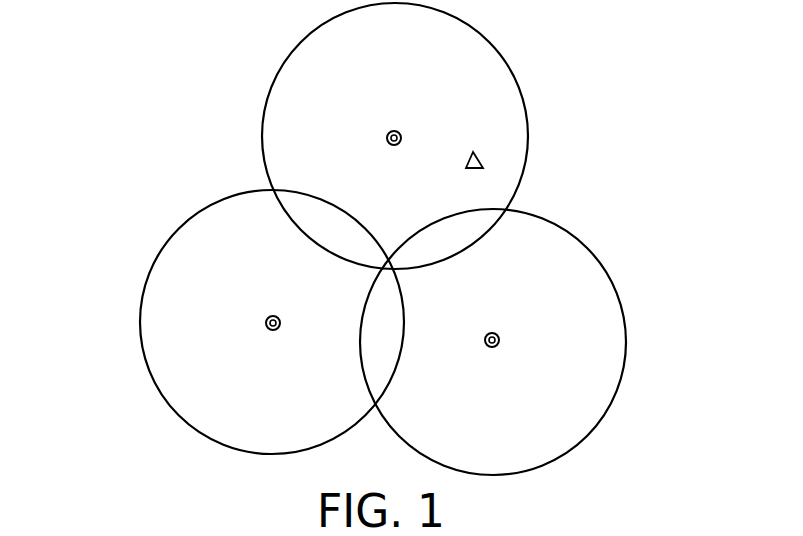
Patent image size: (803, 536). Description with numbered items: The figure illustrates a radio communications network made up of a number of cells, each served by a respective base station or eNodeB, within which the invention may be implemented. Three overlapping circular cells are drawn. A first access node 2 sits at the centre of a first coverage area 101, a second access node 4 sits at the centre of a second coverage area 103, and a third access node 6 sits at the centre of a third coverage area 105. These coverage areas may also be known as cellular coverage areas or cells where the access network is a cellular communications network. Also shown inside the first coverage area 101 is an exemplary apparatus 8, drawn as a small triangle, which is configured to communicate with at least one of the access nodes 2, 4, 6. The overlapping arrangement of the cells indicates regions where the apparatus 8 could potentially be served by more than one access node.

The first coverage area 101 is at (492, 45).
The second coverage area 103 is at (627, 335).
The third coverage area 105 is at (138, 322).
The first access node 2 is at (395, 129).
The second access node 4 is at (497, 332).
The third access node 6 is at (278, 314).
The apparatus 8 is at (483, 162).